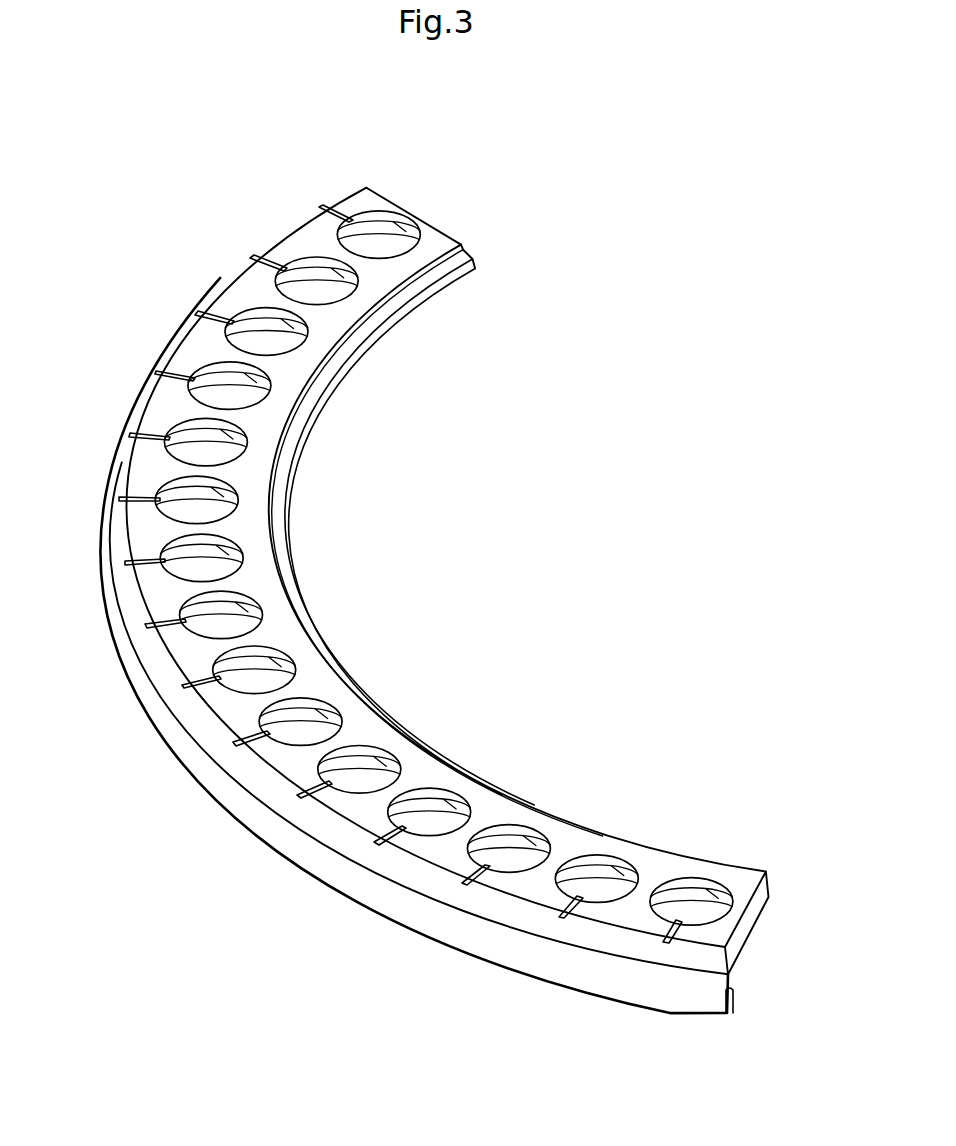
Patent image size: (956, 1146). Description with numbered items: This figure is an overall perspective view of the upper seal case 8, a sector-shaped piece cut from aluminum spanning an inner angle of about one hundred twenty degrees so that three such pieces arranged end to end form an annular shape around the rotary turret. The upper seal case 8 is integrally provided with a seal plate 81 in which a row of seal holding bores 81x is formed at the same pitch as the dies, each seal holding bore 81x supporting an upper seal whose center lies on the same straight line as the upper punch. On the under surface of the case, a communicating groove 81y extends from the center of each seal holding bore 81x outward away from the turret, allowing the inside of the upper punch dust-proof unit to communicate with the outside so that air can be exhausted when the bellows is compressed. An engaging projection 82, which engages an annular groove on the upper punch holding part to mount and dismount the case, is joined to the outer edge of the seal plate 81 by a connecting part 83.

The upper seal case 8 is at (466, 692).
The seal plate 81 is at (480, 797).
The seal holding bore 81x is at (491, 554).
The communicating groove 81y is at (368, 595).
The engaging projection 82 is at (734, 997).
The connecting part 83 is at (593, 968).